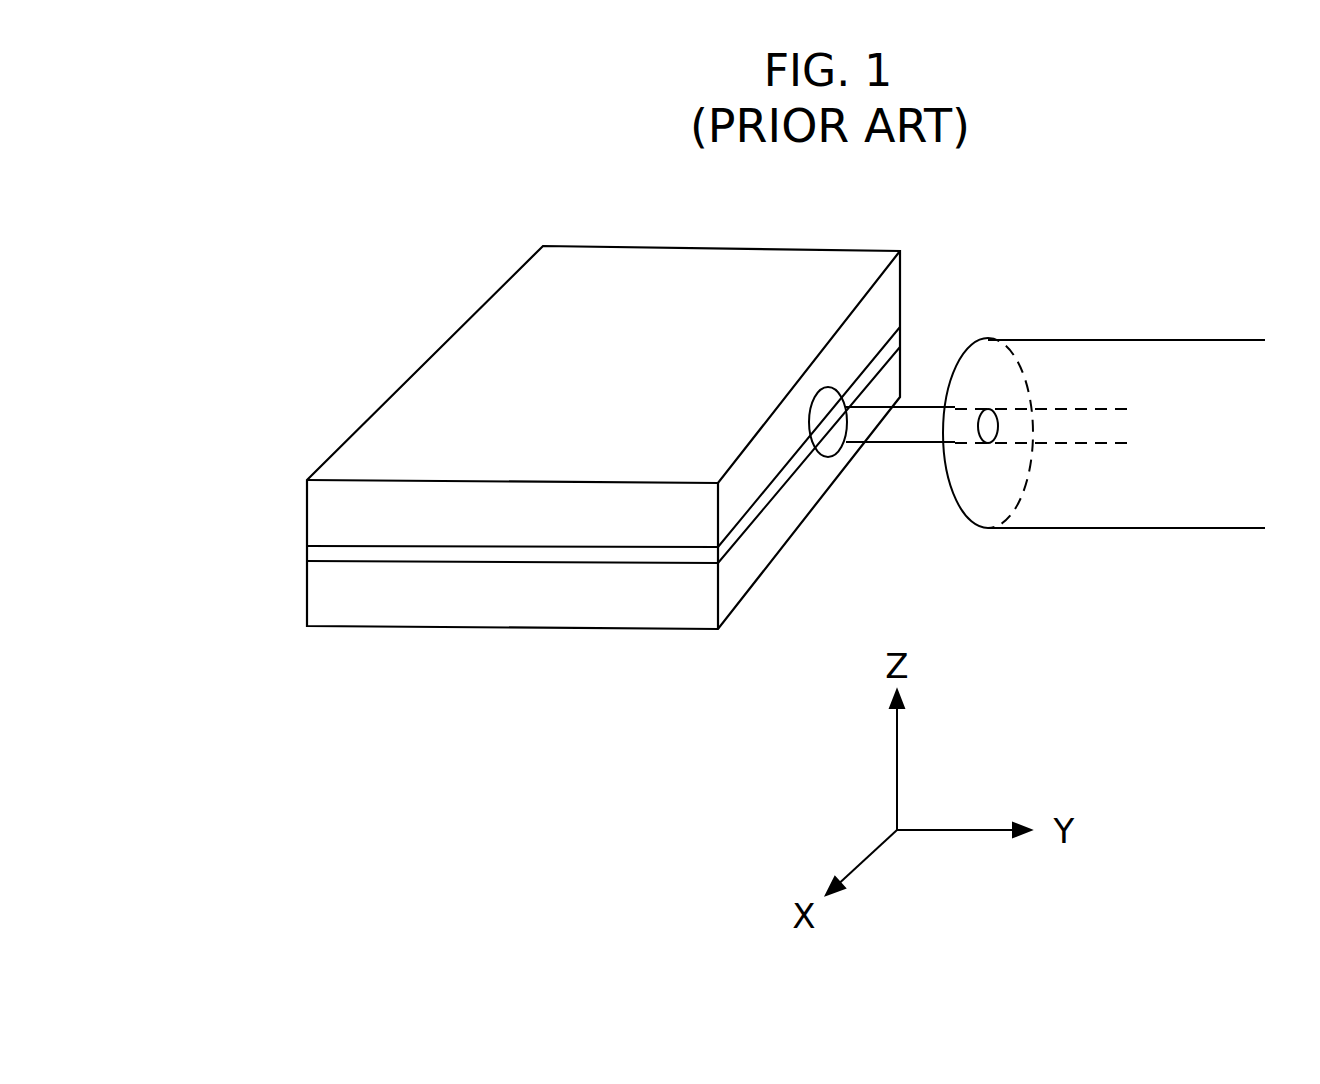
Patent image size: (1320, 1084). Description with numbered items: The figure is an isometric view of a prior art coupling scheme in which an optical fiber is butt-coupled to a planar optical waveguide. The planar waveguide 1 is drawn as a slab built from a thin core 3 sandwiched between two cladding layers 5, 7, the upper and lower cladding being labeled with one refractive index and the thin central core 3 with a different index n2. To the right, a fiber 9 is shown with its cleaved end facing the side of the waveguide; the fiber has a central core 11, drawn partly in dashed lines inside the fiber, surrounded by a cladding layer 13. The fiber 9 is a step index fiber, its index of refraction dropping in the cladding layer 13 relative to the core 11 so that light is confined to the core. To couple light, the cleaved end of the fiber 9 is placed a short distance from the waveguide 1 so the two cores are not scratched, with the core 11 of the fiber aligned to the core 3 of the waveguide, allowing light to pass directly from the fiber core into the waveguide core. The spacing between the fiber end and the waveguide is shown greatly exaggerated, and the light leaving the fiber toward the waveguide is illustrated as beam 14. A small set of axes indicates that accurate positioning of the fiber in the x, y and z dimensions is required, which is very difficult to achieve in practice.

The planar waveguide 1 is at (505, 276).
The core 3 is at (728, 541).
The cladding layer 5 is at (680, 531).
The cladding layer 7 is at (680, 613).
The fiber 9 is at (1167, 384).
The core 11 is at (1017, 407).
The cladding layer 13 is at (977, 470).
The beam 14 is at (922, 423).
The core refractive index n2 is at (300, 551).